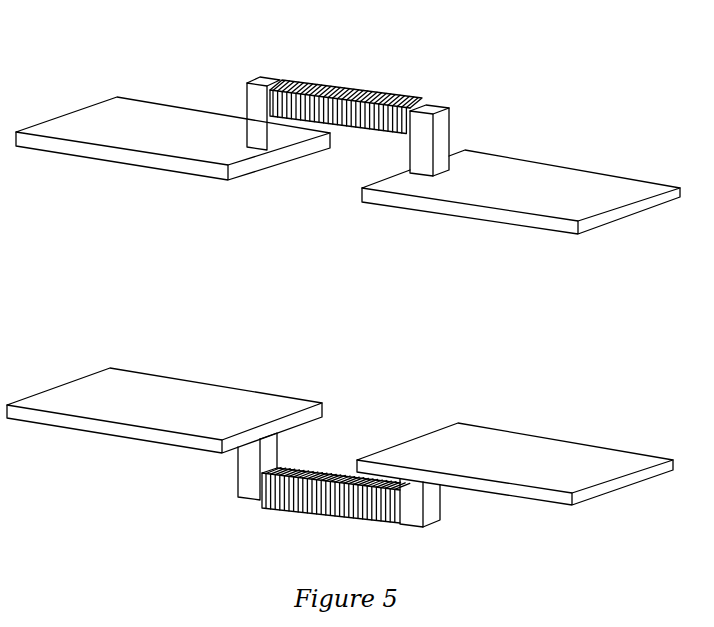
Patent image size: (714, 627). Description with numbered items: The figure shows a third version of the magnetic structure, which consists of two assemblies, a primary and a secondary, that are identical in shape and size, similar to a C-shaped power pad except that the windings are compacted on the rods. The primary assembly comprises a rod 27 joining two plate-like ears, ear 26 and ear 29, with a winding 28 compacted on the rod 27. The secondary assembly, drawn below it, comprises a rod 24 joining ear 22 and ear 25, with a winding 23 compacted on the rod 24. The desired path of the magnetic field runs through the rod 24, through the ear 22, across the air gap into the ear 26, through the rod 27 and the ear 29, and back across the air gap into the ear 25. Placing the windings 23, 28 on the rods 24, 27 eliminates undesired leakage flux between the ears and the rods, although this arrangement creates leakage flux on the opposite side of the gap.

The ear 22 is at (517, 458).
The winding 23 is at (287, 512).
The rod 24 is at (416, 501).
The ear 25 is at (160, 395).
The ear 26 is at (557, 188).
The rod 27 is at (446, 134).
The winding 28 is at (366, 87).
The ear 29 is at (150, 128).